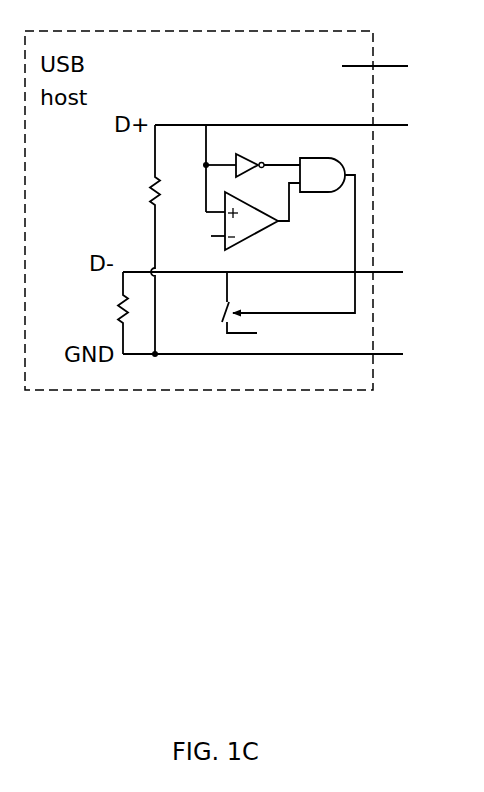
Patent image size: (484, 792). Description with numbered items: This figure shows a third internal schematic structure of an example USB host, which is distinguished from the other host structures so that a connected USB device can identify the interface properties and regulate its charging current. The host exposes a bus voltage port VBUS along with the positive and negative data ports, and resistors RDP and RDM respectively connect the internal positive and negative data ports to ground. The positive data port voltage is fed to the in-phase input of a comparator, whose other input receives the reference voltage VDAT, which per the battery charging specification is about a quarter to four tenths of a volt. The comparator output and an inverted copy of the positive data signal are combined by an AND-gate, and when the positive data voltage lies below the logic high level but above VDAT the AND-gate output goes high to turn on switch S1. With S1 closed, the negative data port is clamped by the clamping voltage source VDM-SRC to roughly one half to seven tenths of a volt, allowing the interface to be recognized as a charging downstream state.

The VBUS port VBUS is at (348, 66).
The resistor RDP is at (133, 239).
The resistor RDM is at (98, 313).
The voltage VDAT is at (196, 246).
The switch S1 is at (226, 302).
The clamping voltage source VDM-SRC is at (294, 334).